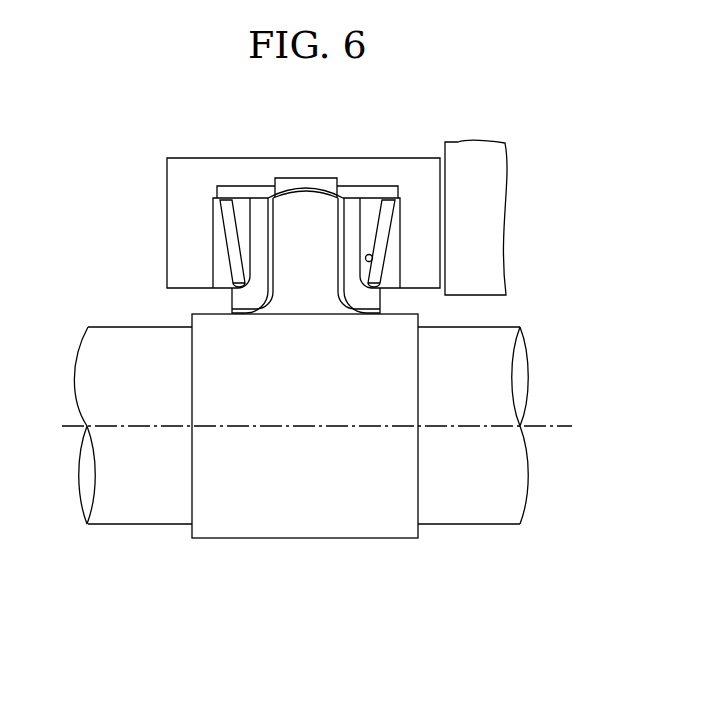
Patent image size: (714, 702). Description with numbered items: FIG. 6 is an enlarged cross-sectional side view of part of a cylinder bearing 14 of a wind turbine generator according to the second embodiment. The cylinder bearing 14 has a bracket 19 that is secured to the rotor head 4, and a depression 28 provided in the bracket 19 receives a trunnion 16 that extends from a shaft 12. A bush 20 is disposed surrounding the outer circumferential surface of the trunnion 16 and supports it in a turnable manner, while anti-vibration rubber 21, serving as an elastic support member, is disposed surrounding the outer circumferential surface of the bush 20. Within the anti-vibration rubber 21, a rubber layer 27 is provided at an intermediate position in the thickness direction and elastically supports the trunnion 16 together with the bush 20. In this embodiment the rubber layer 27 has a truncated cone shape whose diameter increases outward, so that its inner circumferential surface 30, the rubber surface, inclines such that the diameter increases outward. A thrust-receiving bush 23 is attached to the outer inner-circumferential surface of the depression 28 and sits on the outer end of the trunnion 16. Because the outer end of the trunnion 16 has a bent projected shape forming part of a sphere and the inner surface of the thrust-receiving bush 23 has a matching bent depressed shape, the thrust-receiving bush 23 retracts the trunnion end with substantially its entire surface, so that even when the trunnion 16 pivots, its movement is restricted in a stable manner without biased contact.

The rotor head 4 is at (445, 146).
The shaft 12 is at (103, 327).
The cylinder bearing 14 is at (127, 224).
The trunnion 16 is at (298, 303).
The bracket 19 is at (167, 180).
The bush 20 is at (347, 208).
The anti-vibration rubber 21 is at (394, 165).
The thrust-receiving bush 23 is at (295, 183).
The rubber layer 27 is at (383, 223).
The depression 28 is at (258, 190).
The inner circumferential surface 30 is at (372, 258).